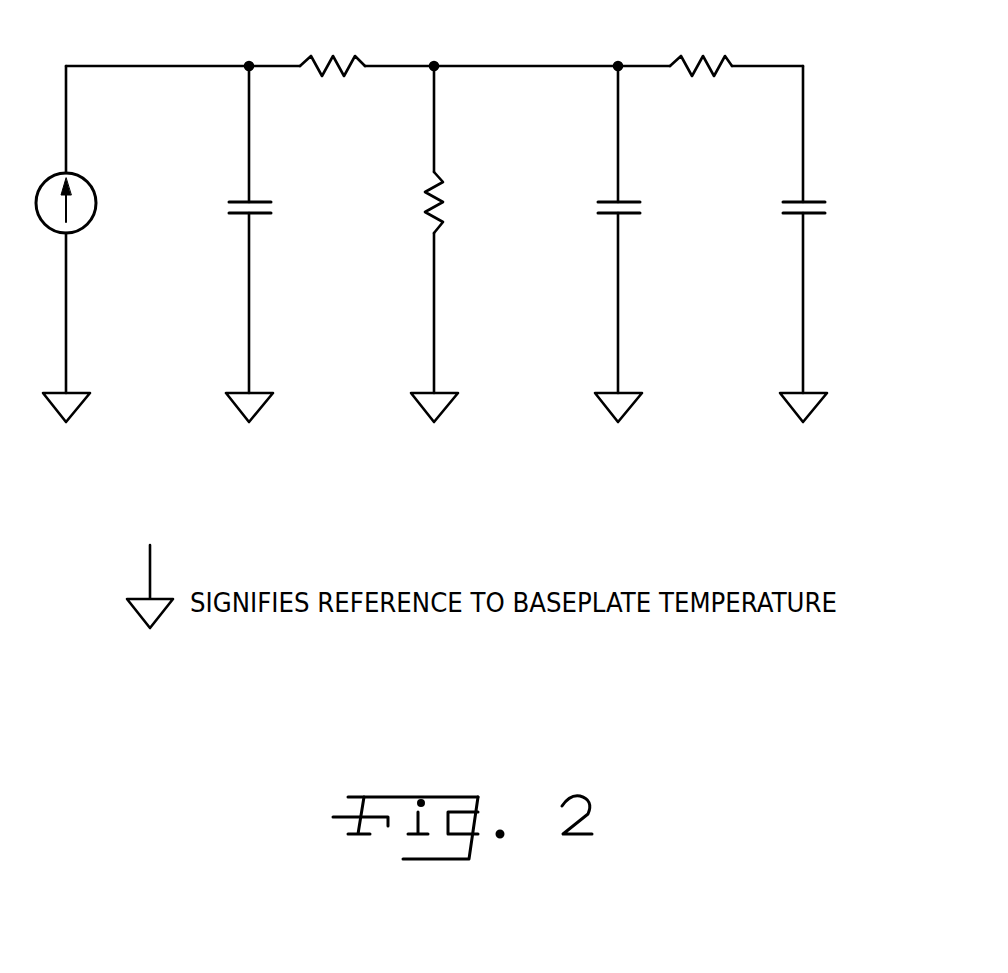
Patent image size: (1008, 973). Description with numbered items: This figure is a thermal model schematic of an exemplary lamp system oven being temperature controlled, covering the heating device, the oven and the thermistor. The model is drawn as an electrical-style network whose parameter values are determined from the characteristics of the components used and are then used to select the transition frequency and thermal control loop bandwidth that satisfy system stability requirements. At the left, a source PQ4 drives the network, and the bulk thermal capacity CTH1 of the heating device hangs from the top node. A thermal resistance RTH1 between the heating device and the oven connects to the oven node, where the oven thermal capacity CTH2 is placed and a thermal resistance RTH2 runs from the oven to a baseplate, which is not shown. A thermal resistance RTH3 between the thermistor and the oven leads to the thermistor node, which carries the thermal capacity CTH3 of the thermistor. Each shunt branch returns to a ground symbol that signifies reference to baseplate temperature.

The power (heat) source of transistor Q4 PQ4 is at (81, 229).
The bulk thermal capacity of heating device CTH1 is at (278, 229).
The thermal resistance between heating device and oven RTH1 is at (332, 50).
The thermal resistance from oven to baseplate RTH2 is at (467, 229).
The oven thermal capacity CTH2 is at (644, 229).
The thermal resistance between thermistor and oven RTH3 is at (701, 50).
The thermal capacity of thermistor CTH3 is at (828, 229).